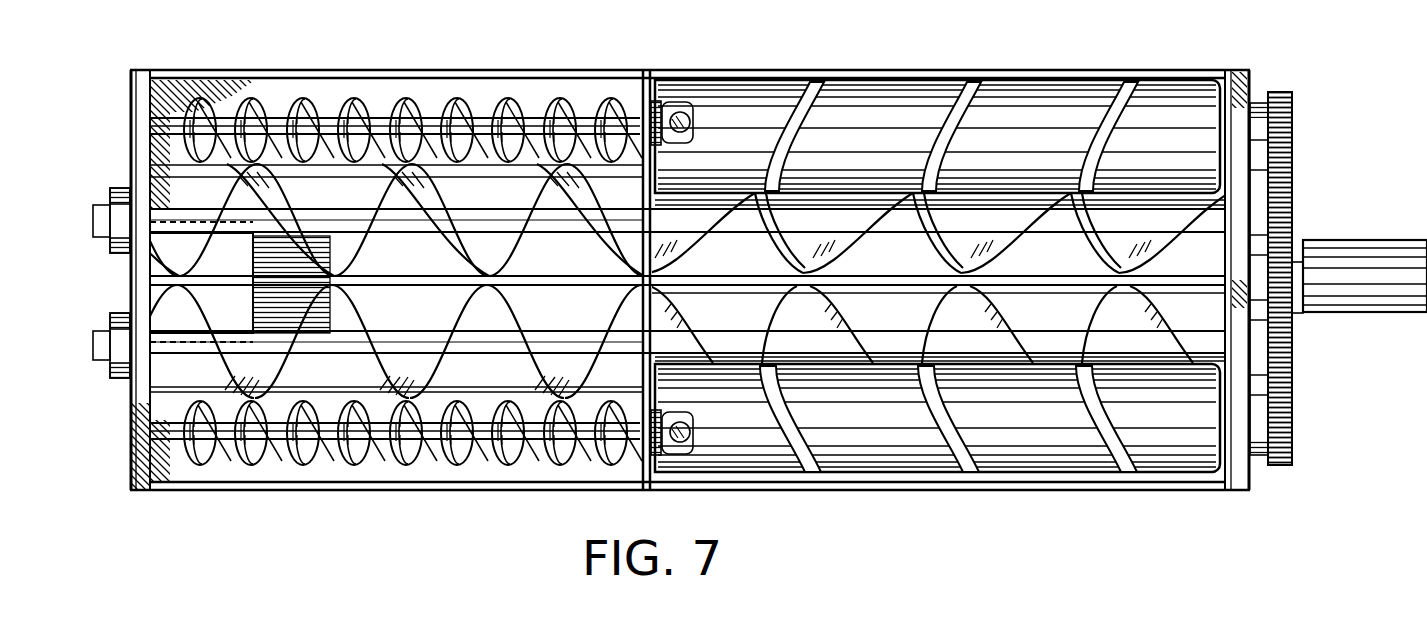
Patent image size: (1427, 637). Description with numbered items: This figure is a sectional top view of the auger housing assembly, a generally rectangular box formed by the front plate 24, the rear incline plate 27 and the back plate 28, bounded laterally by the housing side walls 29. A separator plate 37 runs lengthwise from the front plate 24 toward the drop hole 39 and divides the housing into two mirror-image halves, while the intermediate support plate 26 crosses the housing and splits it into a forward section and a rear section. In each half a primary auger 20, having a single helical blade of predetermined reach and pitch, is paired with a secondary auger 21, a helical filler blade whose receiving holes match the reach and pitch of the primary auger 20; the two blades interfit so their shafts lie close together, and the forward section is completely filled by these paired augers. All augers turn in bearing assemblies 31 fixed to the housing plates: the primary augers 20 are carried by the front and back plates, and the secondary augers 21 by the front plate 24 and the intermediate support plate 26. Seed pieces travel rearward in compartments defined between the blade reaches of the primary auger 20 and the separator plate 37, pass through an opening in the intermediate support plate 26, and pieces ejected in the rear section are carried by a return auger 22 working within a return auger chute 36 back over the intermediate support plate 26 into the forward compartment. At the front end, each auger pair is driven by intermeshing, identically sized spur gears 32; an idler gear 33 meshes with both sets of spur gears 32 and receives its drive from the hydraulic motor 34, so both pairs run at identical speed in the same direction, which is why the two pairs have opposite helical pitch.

The primary auger 20 is at (990, 246).
The secondary auger 21 is at (1040, 84).
The return auger 22 is at (405, 98).
The front plate 24 is at (1237, 482).
The intermediate support plate 26 is at (647, 167).
The rear incline plate 27 is at (170, 482).
The back plate 28 is at (130, 113).
The housing side walls 29 is at (528, 78).
The bearing assemblies 31 is at (110, 190).
The spur gears 32 is at (1300, 190).
The idler gear 33 is at (1298, 305).
The hydraulic motor 34 is at (1378, 240).
The return auger chute 36 is at (338, 98).
The separator plate 37 is at (862, 283).
The drop hole 39 is at (160, 274).